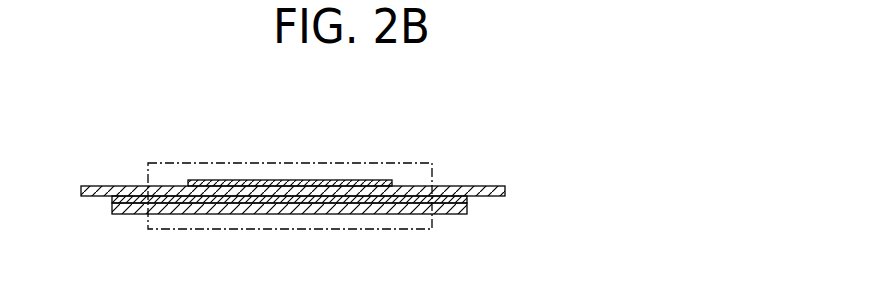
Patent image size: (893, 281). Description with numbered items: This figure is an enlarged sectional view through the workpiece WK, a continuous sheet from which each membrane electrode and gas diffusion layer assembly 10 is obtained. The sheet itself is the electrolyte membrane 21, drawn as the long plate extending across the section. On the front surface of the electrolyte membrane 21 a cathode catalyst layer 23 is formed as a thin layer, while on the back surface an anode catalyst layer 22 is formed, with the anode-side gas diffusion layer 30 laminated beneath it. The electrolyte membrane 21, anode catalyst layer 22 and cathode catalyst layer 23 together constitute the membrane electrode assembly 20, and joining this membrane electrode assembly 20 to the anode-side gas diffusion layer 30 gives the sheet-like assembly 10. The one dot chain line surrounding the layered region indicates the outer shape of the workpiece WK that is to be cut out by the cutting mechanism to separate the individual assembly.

The workpiece WK is at (274, 162).
The membrane electrode and gas diffusion layer assembly (MEGA) 10 is at (352, 189).
The membrane electrode assembly (MEA) 20 is at (317, 176).
The electrolyte membrane 21 is at (461, 186).
The anode catalyst layer 22 is at (468, 199).
The cathode catalyst layer 23 is at (356, 179).
The anode-side gas diffusion layer (GDL) 30 is at (468, 208).